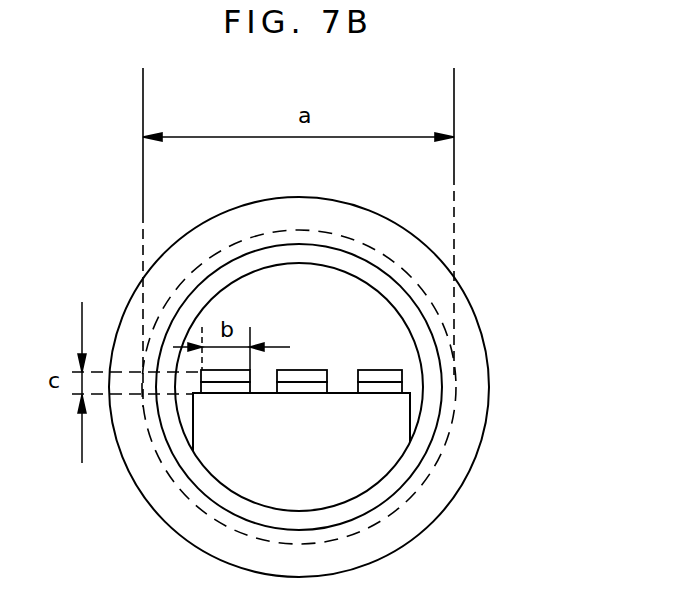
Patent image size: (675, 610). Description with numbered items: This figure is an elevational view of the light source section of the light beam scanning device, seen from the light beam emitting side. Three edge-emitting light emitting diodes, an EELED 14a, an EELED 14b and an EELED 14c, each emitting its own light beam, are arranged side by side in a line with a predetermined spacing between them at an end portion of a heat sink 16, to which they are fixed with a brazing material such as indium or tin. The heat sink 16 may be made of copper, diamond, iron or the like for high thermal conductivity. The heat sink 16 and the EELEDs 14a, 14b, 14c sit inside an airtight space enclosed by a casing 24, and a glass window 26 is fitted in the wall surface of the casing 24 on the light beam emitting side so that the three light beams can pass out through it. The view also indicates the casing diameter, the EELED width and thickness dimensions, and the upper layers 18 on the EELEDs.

The glass window 26 is at (393, 345).
The casing 24 is at (437, 387).
The heat sink 16 is at (373, 457).
The EELED 14a is at (383, 383).
The EELED 14b is at (300, 383).
The EELED 14c is at (220, 383).
The electrode upper layers 18 is at (367, 370).